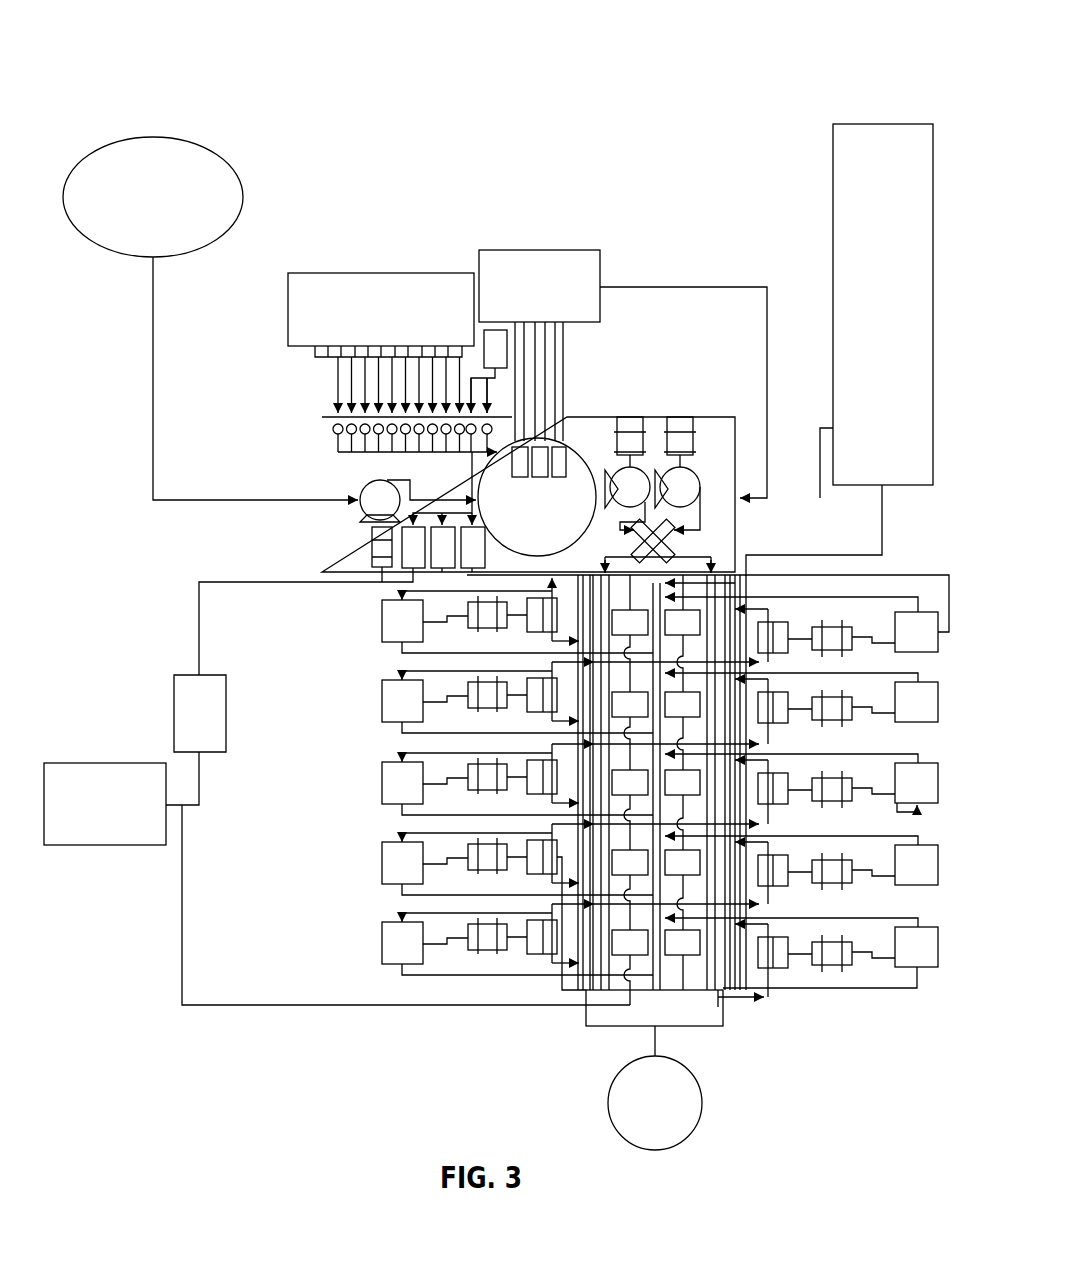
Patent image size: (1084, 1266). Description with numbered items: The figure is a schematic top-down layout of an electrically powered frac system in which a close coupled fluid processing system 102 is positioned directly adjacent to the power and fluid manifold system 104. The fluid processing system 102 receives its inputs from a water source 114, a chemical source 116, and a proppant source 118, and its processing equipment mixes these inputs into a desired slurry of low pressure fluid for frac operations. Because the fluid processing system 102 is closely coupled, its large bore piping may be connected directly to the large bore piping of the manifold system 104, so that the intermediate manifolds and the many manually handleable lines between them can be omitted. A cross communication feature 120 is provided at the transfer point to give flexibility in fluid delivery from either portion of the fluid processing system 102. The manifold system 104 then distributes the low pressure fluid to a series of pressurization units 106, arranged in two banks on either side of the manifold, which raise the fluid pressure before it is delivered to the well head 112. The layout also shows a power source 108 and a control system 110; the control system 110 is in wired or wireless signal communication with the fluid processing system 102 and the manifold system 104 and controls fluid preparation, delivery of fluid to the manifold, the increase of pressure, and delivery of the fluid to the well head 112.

The fluid processing system 102 is at (702, 202).
The power and fluid manifold system 104 is at (290, 40).
The pressurization units 106 is at (553, 1040).
The power source 108 is at (110, 763).
The control system 110 is at (897, 124).
The well head 112 is at (609, 1099).
The water source 114 is at (137, 137).
The chemical source 116 is at (362, 273).
The proppant source 118 is at (546, 250).
The cross communication feature 120 is at (672, 543).